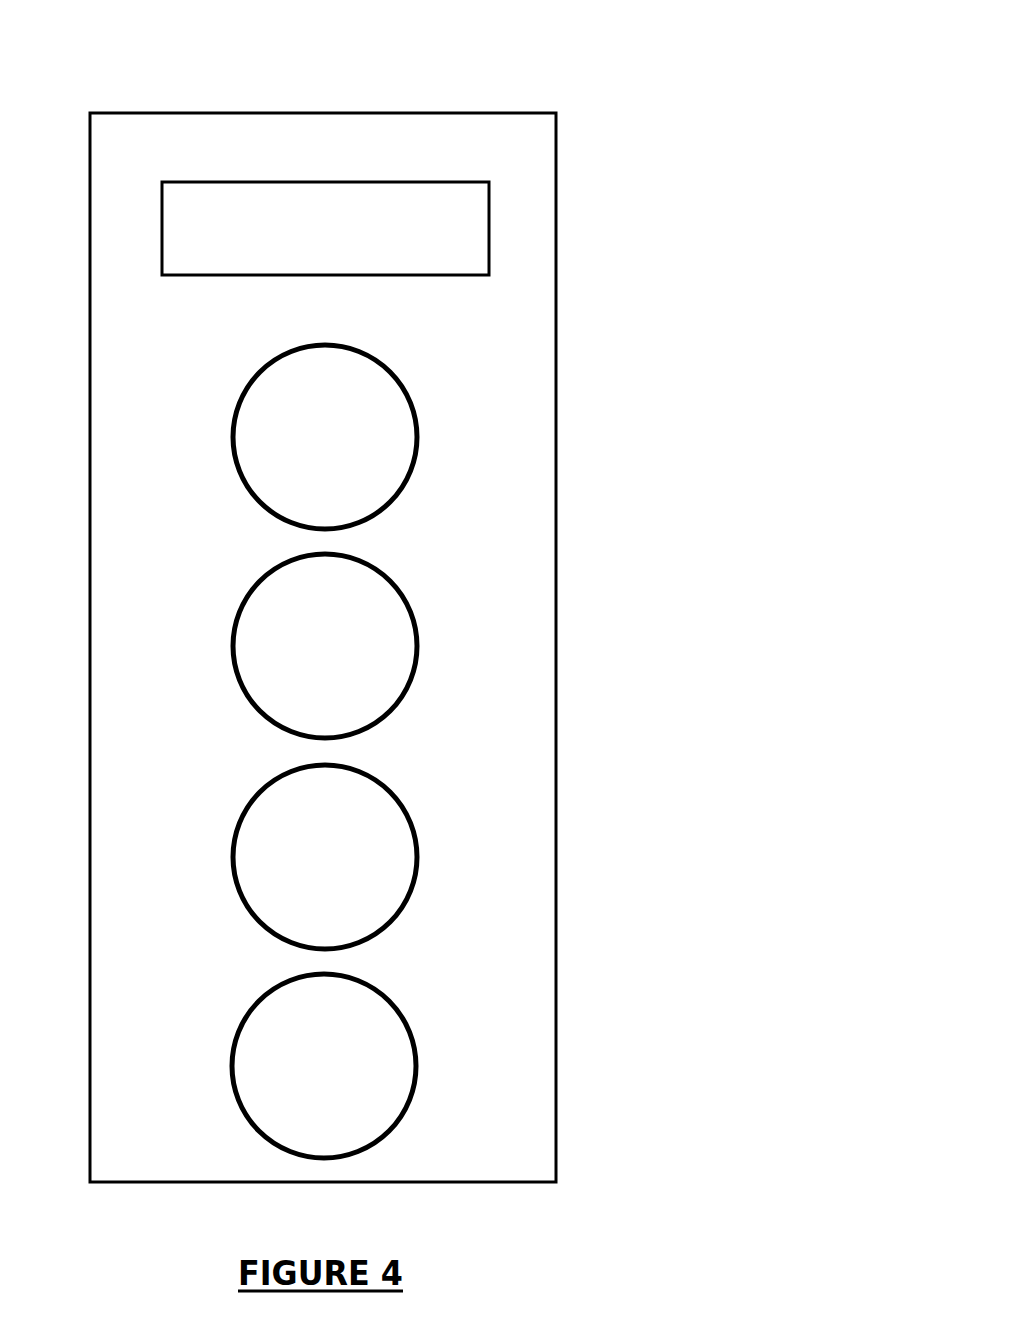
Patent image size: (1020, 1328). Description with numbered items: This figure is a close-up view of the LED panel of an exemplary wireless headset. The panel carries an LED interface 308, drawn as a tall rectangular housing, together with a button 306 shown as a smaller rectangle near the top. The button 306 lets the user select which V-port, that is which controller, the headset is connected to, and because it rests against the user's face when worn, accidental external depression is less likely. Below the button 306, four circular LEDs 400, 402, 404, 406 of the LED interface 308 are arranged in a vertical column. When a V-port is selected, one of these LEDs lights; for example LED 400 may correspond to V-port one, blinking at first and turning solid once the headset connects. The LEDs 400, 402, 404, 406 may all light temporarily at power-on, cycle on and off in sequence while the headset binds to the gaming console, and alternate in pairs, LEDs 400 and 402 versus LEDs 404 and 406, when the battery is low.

The LED interface 308 is at (355, 34).
The button 306 is at (464, 227).
The LED 400 is at (348, 473).
The LED 402 is at (369, 683).
The LED 404 is at (370, 868).
The LED 406 is at (392, 1065).